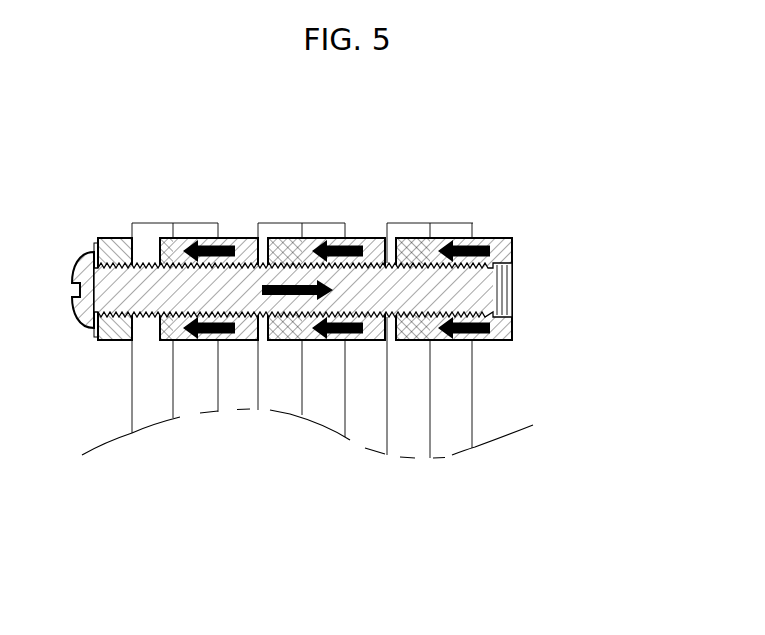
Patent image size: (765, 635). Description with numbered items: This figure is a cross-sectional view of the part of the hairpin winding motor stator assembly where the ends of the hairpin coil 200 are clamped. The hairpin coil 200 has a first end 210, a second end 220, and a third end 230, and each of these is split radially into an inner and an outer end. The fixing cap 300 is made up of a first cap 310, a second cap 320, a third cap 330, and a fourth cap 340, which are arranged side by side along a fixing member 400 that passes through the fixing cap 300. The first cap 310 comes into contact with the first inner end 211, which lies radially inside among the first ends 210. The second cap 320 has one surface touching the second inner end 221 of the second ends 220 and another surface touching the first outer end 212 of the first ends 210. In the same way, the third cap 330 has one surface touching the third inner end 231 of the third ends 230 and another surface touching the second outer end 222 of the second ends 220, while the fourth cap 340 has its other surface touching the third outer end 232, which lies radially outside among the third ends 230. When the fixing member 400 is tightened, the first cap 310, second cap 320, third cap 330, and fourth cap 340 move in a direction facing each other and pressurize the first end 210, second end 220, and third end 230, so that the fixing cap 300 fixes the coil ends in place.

The hairpin coil 200 is at (303, 424).
The first end 210 is at (432, 403).
The first inner end 211 is at (450, 423).
The first outer end 212 is at (395, 423).
The second end 220 is at (284, 384).
The second inner end 221 is at (327, 397).
The second outer end 222 is at (278, 390).
The third end 230 is at (145, 395).
The third inner end 231 is at (190, 400).
The third outer end 232 is at (148, 400).
The fixing cap 300 is at (300, 215).
The first cap 310 is at (448, 248).
The second cap 320 is at (290, 238).
The third cap 330 is at (242, 238).
The fourth cap 340 is at (110, 238).
The fixing member 400 is at (477, 288).